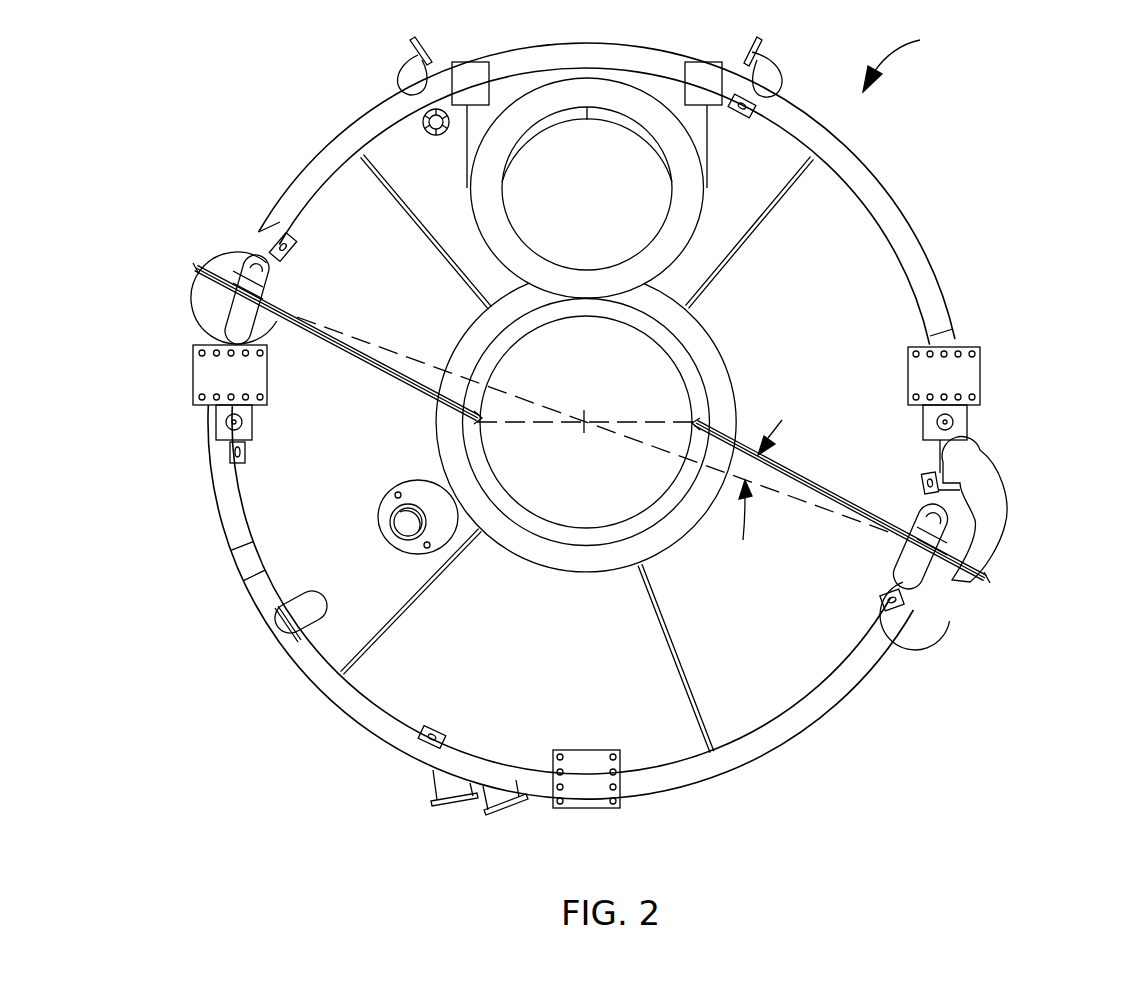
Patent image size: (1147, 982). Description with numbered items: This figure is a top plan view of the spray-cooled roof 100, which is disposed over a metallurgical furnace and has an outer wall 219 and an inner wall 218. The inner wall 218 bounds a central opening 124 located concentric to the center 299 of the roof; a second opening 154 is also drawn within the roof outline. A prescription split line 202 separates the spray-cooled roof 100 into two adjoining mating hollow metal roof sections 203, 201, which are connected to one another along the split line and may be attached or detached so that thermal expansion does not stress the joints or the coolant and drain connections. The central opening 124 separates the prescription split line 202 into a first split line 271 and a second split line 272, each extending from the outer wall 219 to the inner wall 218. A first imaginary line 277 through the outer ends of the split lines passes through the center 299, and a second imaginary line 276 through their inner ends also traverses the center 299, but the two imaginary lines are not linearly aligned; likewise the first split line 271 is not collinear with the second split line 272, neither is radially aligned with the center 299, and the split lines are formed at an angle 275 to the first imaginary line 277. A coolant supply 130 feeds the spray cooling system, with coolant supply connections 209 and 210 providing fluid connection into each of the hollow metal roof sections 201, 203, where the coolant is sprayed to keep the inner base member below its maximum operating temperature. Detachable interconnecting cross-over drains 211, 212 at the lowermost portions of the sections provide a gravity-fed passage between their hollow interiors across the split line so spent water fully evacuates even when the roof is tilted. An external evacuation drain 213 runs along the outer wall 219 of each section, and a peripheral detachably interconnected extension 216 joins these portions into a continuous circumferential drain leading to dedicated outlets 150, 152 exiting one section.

The spray-cooled roof 100 is at (914, 60).
The central opening 124 is at (655, 385).
The coolant supply 130 is at (273, 632).
The dedicated outlet 150 is at (448, 800).
The dedicated outlet 152 is at (510, 812).
The upper cylindrical vessel 154 is at (608, 198).
The hollow metal roof section 201 is at (648, 708).
The prescription split line 202 is at (340, 350).
The hollow metal roof section 203 is at (807, 292).
The coolant supply connection 209 is at (913, 582).
The coolant supply connection 210 is at (253, 262).
The interconnecting cross-over drain 211 is at (985, 578).
The interconnecting cross-over drain 212 is at (203, 308).
The external evacuation drain 213 is at (947, 340).
The interconnected extension 216 is at (990, 472).
The inner wall 218 is at (503, 358).
The outer wall 219 is at (624, 43).
The first split line 271 is at (800, 472).
The second split line 272 is at (367, 360).
The angle 275 is at (752, 493).
The second imaginary line 276 is at (533, 426).
The first imaginary line 277 is at (393, 352).
The center 299 is at (589, 430).